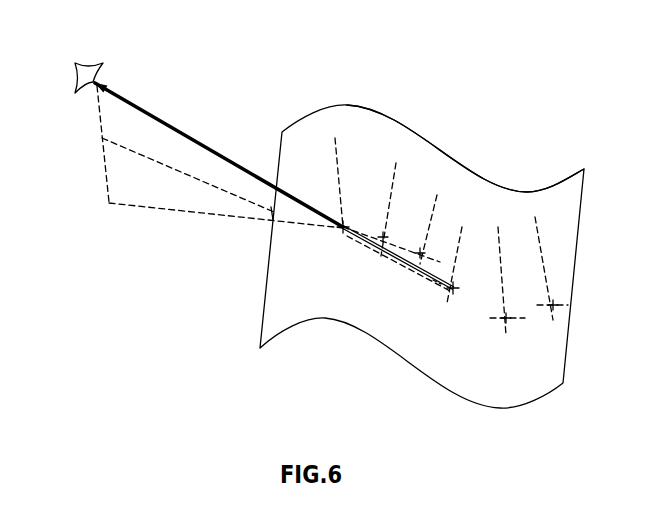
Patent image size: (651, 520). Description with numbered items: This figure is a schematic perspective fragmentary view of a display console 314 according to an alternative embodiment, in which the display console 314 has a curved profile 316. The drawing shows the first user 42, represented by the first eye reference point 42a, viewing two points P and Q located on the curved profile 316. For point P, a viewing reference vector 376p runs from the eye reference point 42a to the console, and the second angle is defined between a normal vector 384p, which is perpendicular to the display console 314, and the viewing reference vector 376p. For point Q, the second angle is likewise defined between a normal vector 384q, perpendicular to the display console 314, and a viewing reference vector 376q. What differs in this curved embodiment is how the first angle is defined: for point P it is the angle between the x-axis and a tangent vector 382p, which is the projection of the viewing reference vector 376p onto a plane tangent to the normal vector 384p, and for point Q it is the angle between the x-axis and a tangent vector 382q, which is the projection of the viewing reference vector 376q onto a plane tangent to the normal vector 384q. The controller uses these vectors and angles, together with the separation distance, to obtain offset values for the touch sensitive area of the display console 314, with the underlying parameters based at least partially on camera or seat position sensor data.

The first user 42 is at (96, 63).
The first eye reference point 42a is at (75, 93).
The display console 314 is at (456, 128).
The curved profile 316 is at (357, 103).
The viewing reference vector 376p is at (204, 137).
The viewing reference vector 376q is at (322, 219).
The tangent vector 382p is at (148, 158).
The tangent vector 382q is at (208, 216).
The normal vector 384p is at (461, 245).
The normal vector 384q is at (337, 152).
The point Q is at (345, 231).
The point P is at (455, 292).